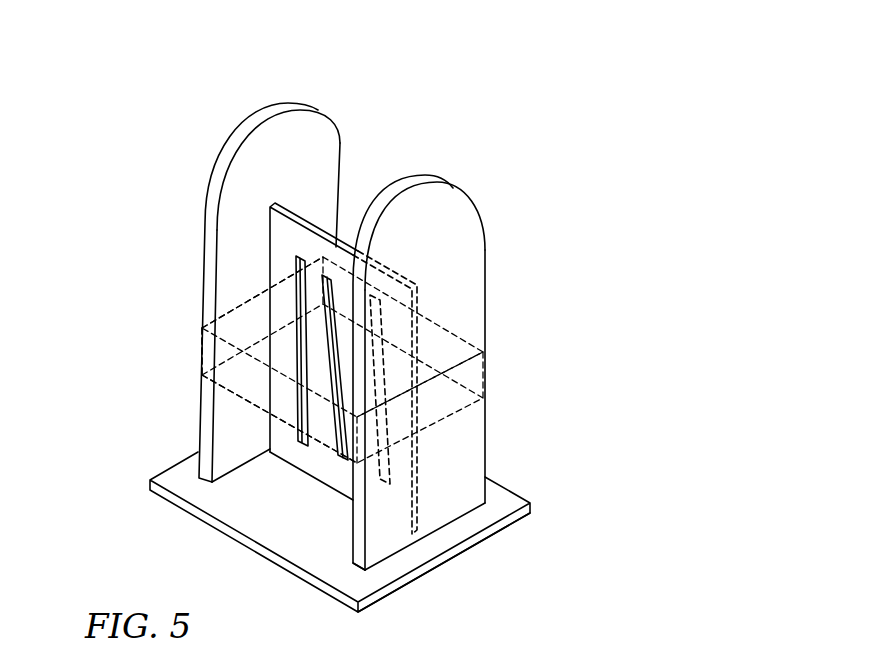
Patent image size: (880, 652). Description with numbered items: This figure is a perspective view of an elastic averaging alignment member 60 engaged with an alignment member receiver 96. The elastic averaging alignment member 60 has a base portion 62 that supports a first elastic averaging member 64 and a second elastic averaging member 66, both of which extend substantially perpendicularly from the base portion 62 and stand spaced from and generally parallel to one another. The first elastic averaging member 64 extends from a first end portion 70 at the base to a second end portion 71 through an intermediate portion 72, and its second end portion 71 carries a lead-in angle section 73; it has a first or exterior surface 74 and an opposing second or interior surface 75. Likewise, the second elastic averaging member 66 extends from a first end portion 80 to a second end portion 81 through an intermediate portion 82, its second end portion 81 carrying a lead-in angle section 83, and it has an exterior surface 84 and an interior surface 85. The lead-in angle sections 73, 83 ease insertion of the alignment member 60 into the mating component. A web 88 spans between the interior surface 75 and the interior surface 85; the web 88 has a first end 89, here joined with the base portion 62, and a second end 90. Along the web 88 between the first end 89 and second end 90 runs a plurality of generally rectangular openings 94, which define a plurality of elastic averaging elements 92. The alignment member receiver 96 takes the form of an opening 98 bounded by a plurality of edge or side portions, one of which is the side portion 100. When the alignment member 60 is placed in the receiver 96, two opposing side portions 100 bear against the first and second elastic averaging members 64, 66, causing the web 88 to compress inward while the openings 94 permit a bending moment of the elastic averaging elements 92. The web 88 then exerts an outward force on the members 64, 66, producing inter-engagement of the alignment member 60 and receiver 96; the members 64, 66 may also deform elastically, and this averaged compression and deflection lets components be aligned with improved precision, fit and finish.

The elastic averaging alignment member 60 is at (140, 166).
The base portion 62 is at (163, 470).
The first elastic averaging member 64 is at (180, 362).
The second elastic averaging member 66 is at (512, 451).
The first end portion 70 is at (212, 476).
The second end portion 71 is at (287, 110).
The intermediate portion 72 is at (231, 218).
The lead-in angle section 73 is at (235, 138).
The exterior surface 74 is at (205, 340).
The interior surface 75 is at (308, 147).
The first end portion 80 is at (393, 553).
The second end portion 81 is at (421, 183).
The intermediate portion 82 is at (463, 266).
The lead-in angle section 83 is at (442, 198).
The exterior surface 84 is at (456, 483).
The interior surface 85 is at (352, 537).
The web 88 is at (243, 412).
The first end 89 is at (282, 458).
The second end 90 is at (335, 247).
The elastic averaging element 92 is at (328, 292).
The opening 94 is at (300, 291).
The alignment member receiver 96 is at (462, 383).
The opening 98 is at (447, 367).
The side portion 100 is at (222, 327).